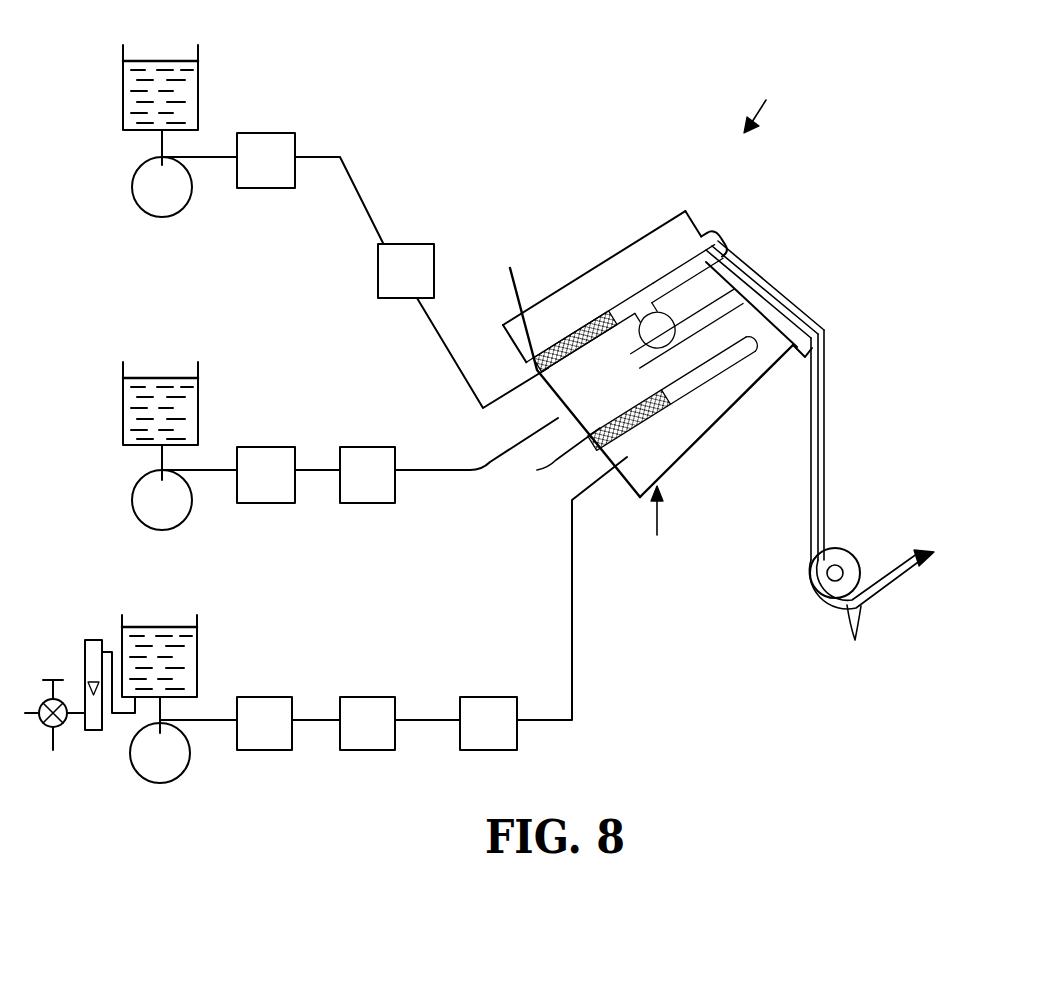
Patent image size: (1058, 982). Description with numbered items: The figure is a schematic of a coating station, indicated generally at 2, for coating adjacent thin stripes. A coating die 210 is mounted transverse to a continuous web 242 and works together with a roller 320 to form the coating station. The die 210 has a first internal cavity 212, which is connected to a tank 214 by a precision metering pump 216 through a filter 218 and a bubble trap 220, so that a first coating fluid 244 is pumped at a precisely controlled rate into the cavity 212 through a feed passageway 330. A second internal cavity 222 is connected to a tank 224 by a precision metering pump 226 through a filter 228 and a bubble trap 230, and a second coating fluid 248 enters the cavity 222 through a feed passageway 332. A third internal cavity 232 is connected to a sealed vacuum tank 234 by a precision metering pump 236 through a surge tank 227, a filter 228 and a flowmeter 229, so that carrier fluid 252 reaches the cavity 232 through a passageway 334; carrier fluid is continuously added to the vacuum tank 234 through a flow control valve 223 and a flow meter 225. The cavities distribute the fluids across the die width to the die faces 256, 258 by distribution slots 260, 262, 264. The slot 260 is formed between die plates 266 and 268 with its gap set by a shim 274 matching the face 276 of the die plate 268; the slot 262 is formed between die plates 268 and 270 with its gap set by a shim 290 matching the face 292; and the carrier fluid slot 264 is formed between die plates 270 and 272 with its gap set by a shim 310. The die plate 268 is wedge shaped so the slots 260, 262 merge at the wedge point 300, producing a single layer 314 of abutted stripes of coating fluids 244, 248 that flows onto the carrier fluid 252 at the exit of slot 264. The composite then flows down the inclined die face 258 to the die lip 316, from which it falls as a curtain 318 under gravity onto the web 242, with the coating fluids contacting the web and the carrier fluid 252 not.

The coating apparatus 2 is at (761, 99).
The coating die 210 is at (656, 525).
The first internal cavity 212 is at (607, 310).
The tank 214 is at (200, 77).
The precision metering pump 216 is at (162, 200).
The filter 218 is at (273, 146).
The bubble trap 220 is at (428, 242).
The second internal cavity 222 is at (618, 297).
The flow control valve 223 is at (56, 734).
The tank 224 is at (215, 395).
The flow meter 225 is at (92, 657).
The precision metering pump 226 is at (160, 513).
The surge tank 227 is at (268, 710).
The filter 228 is at (271, 458).
The flowmeter 229 is at (492, 710).
The bubble trap 230 is at (369, 458).
The third internal cavity 232 is at (695, 383).
The sealed vacuum tank 234 is at (215, 645).
The precision metering pump 236 is at (160, 765).
The continuous web 242 is at (852, 548).
The first coating fluid 244 is at (175, 57).
The second coating fluid 248 is at (175, 371).
The carrier fluid 252 is at (175, 620).
The die face 256 is at (743, 263).
The die face 258 is at (800, 313).
The distribution slot 260 is at (676, 262).
The distribution slot 262 is at (697, 287).
The distribution slot 264 is at (700, 352).
The die plate 266 is at (554, 367).
The die plate 268 is at (522, 412).
The die plate 270 is at (543, 466).
The die plate 272 is at (707, 397).
The shim 274 is at (517, 360).
The face 276 is at (527, 375).
The shim 290 is at (557, 427).
The face 292 is at (662, 300).
The wedge point 300 is at (733, 243).
The shim 310 is at (568, 502).
The layer 314 is at (753, 268).
The die lip 316 is at (807, 353).
The curtain 318 is at (826, 458).
The roller 320 is at (850, 572).
The feed passageway 330 is at (527, 315).
The feed passageway 332 is at (474, 470).
The passageway 334 is at (620, 470).